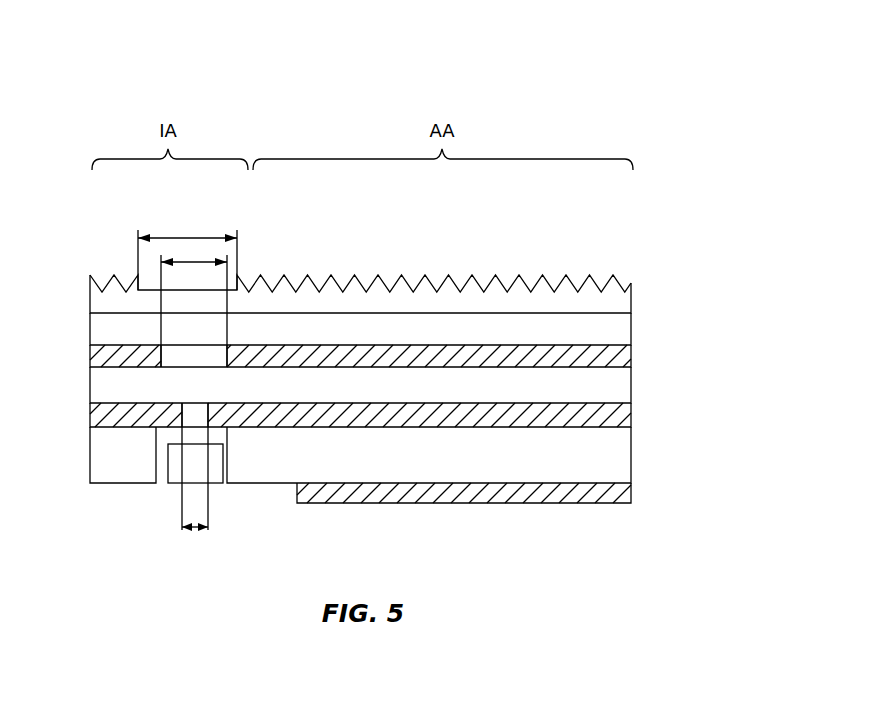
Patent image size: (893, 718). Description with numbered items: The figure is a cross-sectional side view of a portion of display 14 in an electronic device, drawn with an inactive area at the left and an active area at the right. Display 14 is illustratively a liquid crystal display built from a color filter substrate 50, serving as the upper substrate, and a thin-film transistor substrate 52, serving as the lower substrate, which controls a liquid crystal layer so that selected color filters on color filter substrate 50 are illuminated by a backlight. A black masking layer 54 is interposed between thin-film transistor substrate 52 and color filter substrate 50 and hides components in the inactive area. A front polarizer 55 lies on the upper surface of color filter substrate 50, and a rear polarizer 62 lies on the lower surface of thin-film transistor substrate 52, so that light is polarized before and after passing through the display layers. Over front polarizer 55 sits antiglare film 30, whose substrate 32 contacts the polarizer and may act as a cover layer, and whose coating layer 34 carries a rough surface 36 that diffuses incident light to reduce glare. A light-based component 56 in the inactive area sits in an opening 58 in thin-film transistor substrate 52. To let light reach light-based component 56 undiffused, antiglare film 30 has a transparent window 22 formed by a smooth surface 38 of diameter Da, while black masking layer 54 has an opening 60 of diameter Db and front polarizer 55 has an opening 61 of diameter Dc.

The display 14 is at (591, 53).
The transparent window 22 is at (214, 282).
The antiglare film 30 is at (396, 275).
The substrate 32 is at (393, 330).
The coating layer 34 is at (631, 293).
The rough surface 36 is at (99, 286).
The smooth surface 38 is at (180, 289).
The color filter substrate 50 is at (631, 390).
The thin-film transistor substrate 52 is at (631, 457).
The black masking layer 54 is at (631, 418).
The front polarizer 55 is at (631, 357).
The light-based component 56 is at (192, 472).
The opening 58 is at (213, 472).
The opening 60 is at (186, 422).
The opening 61 is at (192, 364).
The rear polarizer 62 is at (631, 496).